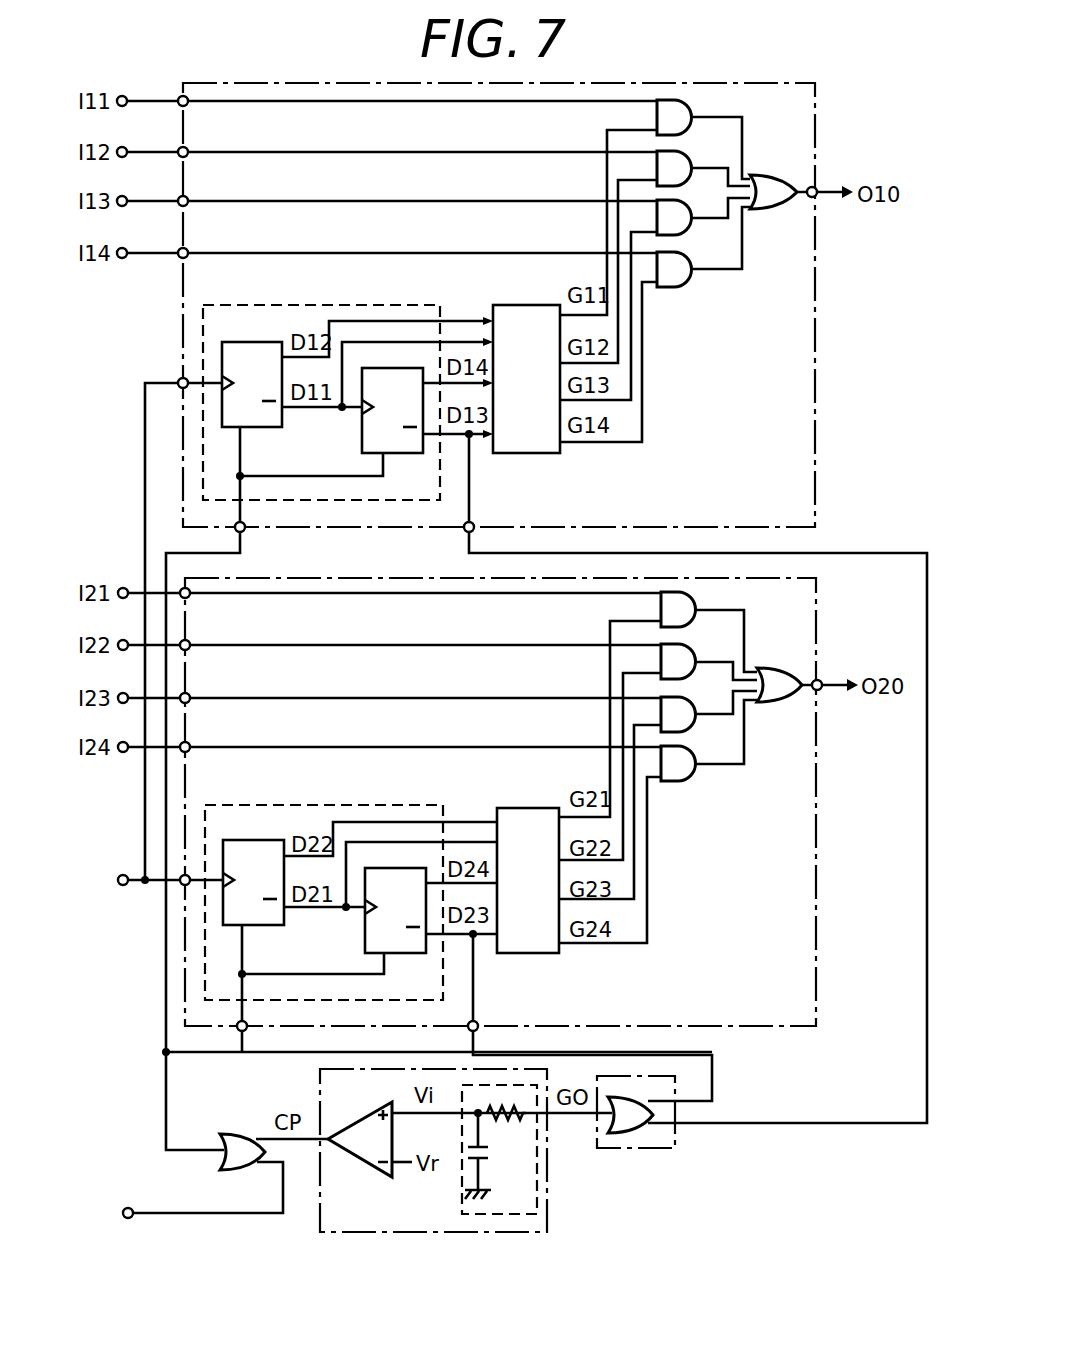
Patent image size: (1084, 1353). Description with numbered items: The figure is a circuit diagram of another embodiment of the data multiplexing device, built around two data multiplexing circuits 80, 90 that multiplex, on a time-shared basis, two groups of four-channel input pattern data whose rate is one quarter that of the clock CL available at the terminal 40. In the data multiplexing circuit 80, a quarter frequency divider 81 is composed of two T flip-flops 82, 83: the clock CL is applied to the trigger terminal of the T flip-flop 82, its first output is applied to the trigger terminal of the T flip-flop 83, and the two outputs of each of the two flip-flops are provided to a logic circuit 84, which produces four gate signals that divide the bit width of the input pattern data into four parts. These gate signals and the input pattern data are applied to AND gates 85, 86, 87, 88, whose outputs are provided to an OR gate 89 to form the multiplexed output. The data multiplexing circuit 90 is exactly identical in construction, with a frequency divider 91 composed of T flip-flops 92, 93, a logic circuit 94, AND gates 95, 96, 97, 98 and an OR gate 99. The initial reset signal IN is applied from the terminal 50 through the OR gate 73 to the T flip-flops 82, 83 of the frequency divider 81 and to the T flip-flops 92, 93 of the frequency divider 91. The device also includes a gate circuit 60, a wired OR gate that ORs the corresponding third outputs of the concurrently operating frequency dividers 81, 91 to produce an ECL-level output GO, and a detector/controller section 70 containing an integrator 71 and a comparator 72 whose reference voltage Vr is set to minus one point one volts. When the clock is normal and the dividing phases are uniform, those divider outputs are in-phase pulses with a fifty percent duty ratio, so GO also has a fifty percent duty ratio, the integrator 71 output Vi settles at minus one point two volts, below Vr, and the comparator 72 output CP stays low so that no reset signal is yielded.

The terminal 40 is at (125, 886).
The terminal 50 is at (130, 1219).
The gate circuit 60 is at (610, 1148).
The detector/controller section 70 is at (340, 1232).
The integrator 71 is at (530, 1214).
The comparator 72 is at (347, 1152).
The OR gate 73 is at (238, 1132).
The data multiplexing circuit 80 is at (815, 312).
The frequency divider 81 is at (270, 305).
The T flip-flop 82 is at (271, 427).
The T flip-flop 83 is at (398, 453).
The logic circuit 84 is at (514, 453).
The AND gate 85 is at (684, 135).
The AND gate 86 is at (684, 186).
The AND gate 87 is at (684, 235).
The AND gate 88 is at (684, 287).
The OR gate 89 is at (786, 210).
The data multiplexing circuit 90 is at (816, 812).
The frequency divider 91 is at (268, 805).
The T flip-flop 92 is at (272, 925).
The T flip-flop 93 is at (400, 953).
The logic circuit 94 is at (516, 953).
The AND gate 95 is at (688, 627).
The AND gate 96 is at (688, 679).
The AND gate 97 is at (688, 732).
The AND gate 98 is at (688, 781).
The OR gate 99 is at (791, 703).